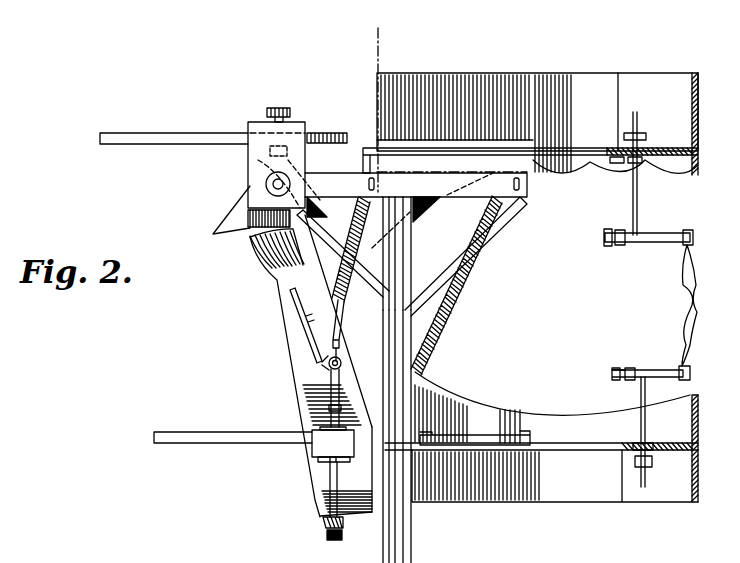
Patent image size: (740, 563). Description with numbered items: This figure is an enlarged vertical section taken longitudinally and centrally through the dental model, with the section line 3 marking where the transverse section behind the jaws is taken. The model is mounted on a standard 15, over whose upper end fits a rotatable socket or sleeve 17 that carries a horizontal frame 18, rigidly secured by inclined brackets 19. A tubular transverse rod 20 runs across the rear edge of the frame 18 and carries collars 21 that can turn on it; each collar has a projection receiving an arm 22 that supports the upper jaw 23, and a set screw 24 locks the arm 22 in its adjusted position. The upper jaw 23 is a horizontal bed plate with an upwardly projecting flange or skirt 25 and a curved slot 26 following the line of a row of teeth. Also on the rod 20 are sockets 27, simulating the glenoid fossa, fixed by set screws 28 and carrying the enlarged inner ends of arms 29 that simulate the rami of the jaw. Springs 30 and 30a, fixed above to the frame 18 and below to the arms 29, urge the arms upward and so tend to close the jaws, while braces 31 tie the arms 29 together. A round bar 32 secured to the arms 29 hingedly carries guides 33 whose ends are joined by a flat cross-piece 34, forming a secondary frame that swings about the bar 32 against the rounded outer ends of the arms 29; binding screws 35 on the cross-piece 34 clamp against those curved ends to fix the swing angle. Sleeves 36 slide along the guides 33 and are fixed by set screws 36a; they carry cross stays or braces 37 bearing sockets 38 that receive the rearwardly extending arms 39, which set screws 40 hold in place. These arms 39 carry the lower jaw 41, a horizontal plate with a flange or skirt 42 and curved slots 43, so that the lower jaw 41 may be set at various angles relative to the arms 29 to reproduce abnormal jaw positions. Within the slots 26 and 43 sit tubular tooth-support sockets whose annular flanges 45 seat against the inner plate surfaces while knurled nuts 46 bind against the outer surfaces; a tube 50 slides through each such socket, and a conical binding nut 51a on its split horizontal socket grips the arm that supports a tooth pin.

The section line 3 is at (377, 101).
The standard 15 is at (413, 541).
The socket or sleeve 17 is at (413, 249).
The frame 18 is at (416, 210).
The brackets 19 is at (345, 238).
The transverse rod 20 is at (266, 184).
The collars 21 is at (307, 135).
The arms 22 is at (203, 134).
The upper jaw 23 is at (699, 160).
The set screws 24 is at (290, 109).
The flange or skirt 25 is at (699, 122).
The slot 26 is at (573, 150).
The sockets 27 is at (232, 222).
The set screws 28 is at (268, 157).
The arms 29 is at (283, 290).
The spring 30 is at (348, 324).
The spring 30a is at (462, 310).
The braces 31 is at (310, 330).
The bar 32 is at (323, 363).
The guides 33 is at (330, 488).
The cross-piece 34 is at (325, 522).
The binding screws 35 is at (326, 537).
The sleeves 36 is at (352, 392).
The set screws 36a is at (300, 397).
The cross stays or braces 37 is at (318, 460).
The sockets 38 is at (380, 427).
The arms 39 is at (233, 450).
The set screws 40 is at (303, 425).
The lower jaw 41 is at (590, 458).
The flange or skirt 42 is at (699, 442).
The curved slots 43 is at (570, 447).
The annular flanges 45 is at (652, 443).
The knurled nuts 46 is at (640, 137).
The tube 50 is at (648, 392).
The conical binding nut 51a is at (626, 380).